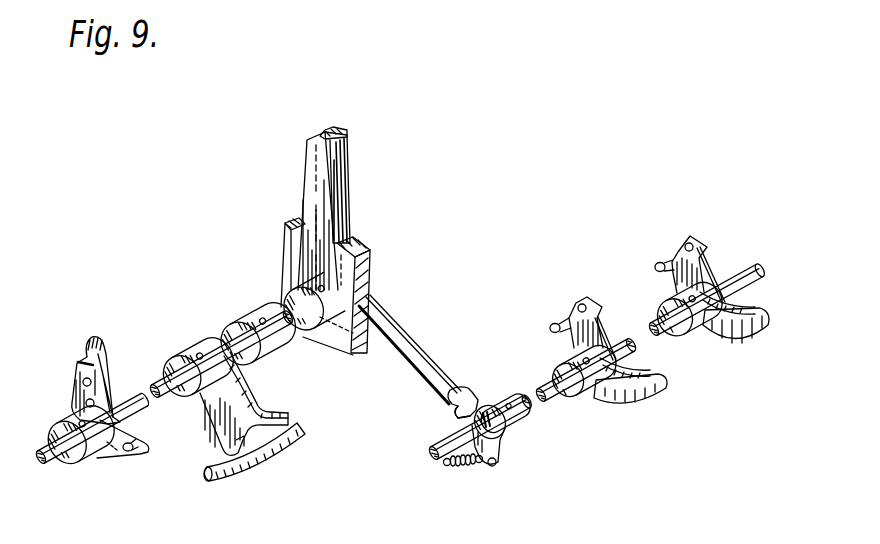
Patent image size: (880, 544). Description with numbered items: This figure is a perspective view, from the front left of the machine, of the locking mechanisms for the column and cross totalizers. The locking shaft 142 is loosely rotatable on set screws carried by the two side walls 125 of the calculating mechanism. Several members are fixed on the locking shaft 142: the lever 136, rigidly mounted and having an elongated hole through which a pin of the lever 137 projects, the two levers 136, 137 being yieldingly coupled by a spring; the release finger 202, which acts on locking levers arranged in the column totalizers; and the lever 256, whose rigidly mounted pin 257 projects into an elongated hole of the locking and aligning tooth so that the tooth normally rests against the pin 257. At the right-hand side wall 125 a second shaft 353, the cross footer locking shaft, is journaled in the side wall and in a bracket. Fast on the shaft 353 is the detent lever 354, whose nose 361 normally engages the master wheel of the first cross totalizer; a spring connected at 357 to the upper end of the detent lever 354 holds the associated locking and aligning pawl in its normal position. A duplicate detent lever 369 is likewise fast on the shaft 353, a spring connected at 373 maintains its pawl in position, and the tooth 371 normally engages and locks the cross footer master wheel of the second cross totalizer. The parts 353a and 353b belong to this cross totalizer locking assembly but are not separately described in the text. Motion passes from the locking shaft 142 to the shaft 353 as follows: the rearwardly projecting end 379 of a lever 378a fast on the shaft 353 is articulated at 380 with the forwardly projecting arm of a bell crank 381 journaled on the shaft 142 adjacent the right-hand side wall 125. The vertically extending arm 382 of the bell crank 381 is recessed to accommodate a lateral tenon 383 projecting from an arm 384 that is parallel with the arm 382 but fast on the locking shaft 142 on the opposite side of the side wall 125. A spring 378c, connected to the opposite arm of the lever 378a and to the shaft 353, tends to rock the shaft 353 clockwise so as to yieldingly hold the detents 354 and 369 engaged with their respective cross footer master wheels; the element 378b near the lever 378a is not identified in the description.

The side wall 125 is at (343, 335).
The lever 136 is at (305, 437).
The lever 137 is at (290, 418).
The locking shaft 142 is at (127, 398).
The release finger 202 is at (103, 341).
The lever 256 is at (110, 447).
The pin 257 is at (153, 446).
The shaft 353 is at (568, 392).
The shoe 353a is at (752, 340).
The shoe 353b is at (662, 385).
The detent lever 354 is at (600, 335).
The spring connection point 357 is at (557, 322).
The nose 361 is at (590, 305).
The detent lever 369 is at (712, 280).
The tooth 371 is at (700, 240).
The spring connection point 373 is at (656, 265).
The lever 378a is at (497, 440).
The lug 378b is at (492, 467).
The spring 378c is at (465, 473).
The rearwardly projecting end 379 is at (455, 410).
The articulation 380 is at (470, 390).
The bell crank 381 is at (393, 343).
The vertically extending arm 382 is at (347, 205).
The lateral tenon 383 is at (343, 137).
The arm 384 is at (313, 202).